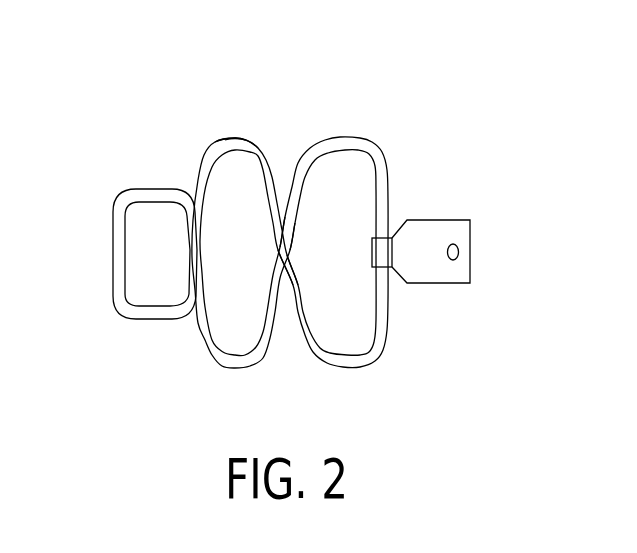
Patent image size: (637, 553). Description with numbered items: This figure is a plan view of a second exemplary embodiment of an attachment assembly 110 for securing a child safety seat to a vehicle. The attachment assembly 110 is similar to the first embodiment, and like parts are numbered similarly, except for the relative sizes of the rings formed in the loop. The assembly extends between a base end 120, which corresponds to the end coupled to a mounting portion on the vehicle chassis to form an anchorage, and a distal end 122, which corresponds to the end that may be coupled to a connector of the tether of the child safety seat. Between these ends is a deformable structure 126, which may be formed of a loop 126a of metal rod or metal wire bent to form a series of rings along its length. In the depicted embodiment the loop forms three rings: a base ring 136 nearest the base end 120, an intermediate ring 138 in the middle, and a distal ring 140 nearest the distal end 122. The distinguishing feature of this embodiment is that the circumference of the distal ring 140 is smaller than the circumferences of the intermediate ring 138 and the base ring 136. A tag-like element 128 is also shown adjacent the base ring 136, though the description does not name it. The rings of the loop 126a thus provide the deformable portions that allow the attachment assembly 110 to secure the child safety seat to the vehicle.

The attachment assembly 110 is at (342, 93).
The base end 120 is at (388, 184).
The distal end 122 is at (118, 283).
The deformable structure 126 is at (233, 137).
The loop 126a is at (237, 117).
The tag 128 is at (439, 285).
The base ring 136 is at (342, 356).
The intermediate ring 138 is at (229, 356).
The distal ring 140 is at (148, 306).